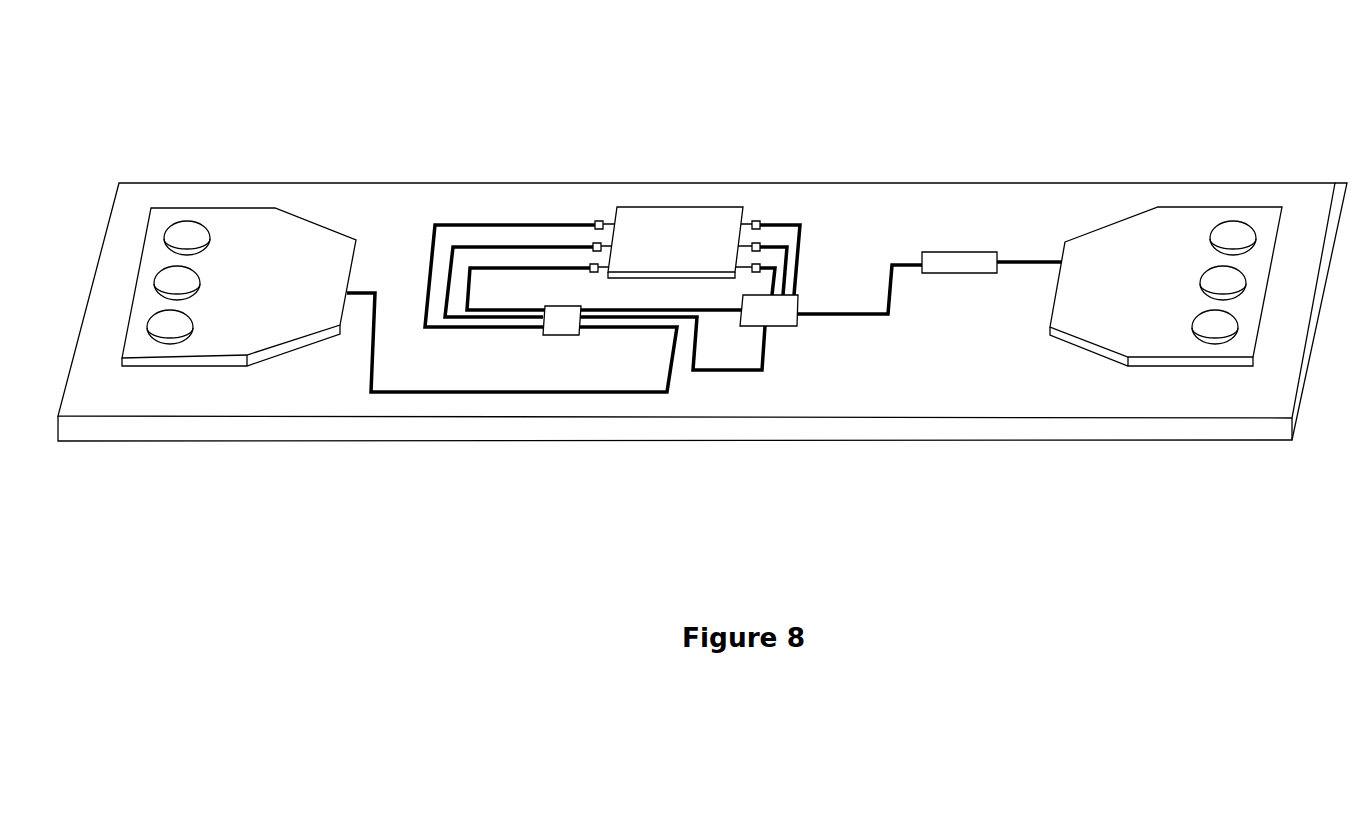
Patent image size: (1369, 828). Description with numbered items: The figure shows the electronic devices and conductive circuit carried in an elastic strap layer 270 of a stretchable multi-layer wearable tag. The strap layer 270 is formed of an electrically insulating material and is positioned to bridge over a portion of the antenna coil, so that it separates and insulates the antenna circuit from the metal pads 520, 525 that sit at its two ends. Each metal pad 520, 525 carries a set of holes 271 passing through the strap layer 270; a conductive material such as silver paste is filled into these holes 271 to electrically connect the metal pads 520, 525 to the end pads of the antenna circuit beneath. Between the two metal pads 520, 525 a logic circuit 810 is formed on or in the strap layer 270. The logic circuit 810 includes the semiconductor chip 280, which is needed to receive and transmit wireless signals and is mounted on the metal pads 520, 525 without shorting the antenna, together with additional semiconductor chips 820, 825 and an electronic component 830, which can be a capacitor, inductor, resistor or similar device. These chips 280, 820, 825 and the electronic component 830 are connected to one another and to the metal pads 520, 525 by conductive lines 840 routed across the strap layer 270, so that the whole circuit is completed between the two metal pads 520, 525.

The strap layer 270 is at (1033, 205).
The holes 271 is at (186, 236).
The semiconductor chip 280 is at (688, 228).
The metal pad 520 is at (262, 228).
The metal pad 525 is at (1172, 230).
The logic circuit 810 is at (536, 213).
The semiconductor chip 820 is at (562, 322).
The semiconductor chip 825 is at (778, 310).
The electronic component 830 is at (948, 252).
The conductive lines 840 is at (452, 392).